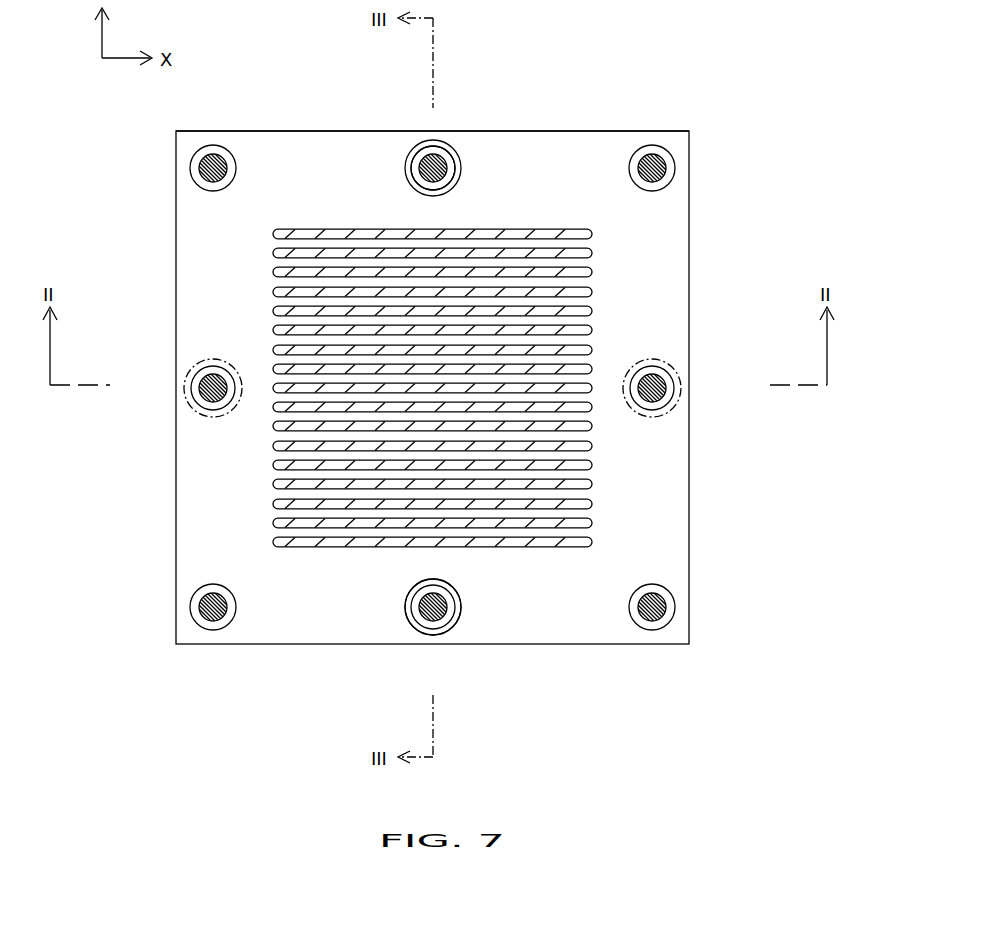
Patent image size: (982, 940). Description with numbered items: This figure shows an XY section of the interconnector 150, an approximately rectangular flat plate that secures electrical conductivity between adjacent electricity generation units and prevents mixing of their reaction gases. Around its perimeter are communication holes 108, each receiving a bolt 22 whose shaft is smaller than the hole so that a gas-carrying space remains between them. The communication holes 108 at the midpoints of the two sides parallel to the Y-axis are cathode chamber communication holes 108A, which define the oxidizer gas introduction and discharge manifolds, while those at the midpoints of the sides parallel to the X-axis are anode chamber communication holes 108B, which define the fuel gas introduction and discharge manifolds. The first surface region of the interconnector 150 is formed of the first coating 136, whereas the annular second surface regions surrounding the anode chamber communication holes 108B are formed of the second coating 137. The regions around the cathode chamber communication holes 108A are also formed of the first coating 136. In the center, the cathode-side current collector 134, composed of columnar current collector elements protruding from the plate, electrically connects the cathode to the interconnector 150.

The communication hole 108 is at (213, 153).
The bolt 22 is at (203, 167).
The cathode chamber communication hole 108A is at (195, 382).
The anode chamber communication hole 108B is at (408, 170).
The second coating 137 is at (575, 687).
The first coating 136 is at (153, 283).
The interconnector 150 is at (176, 232).
The cathode-side current collector 134 is at (592, 235).